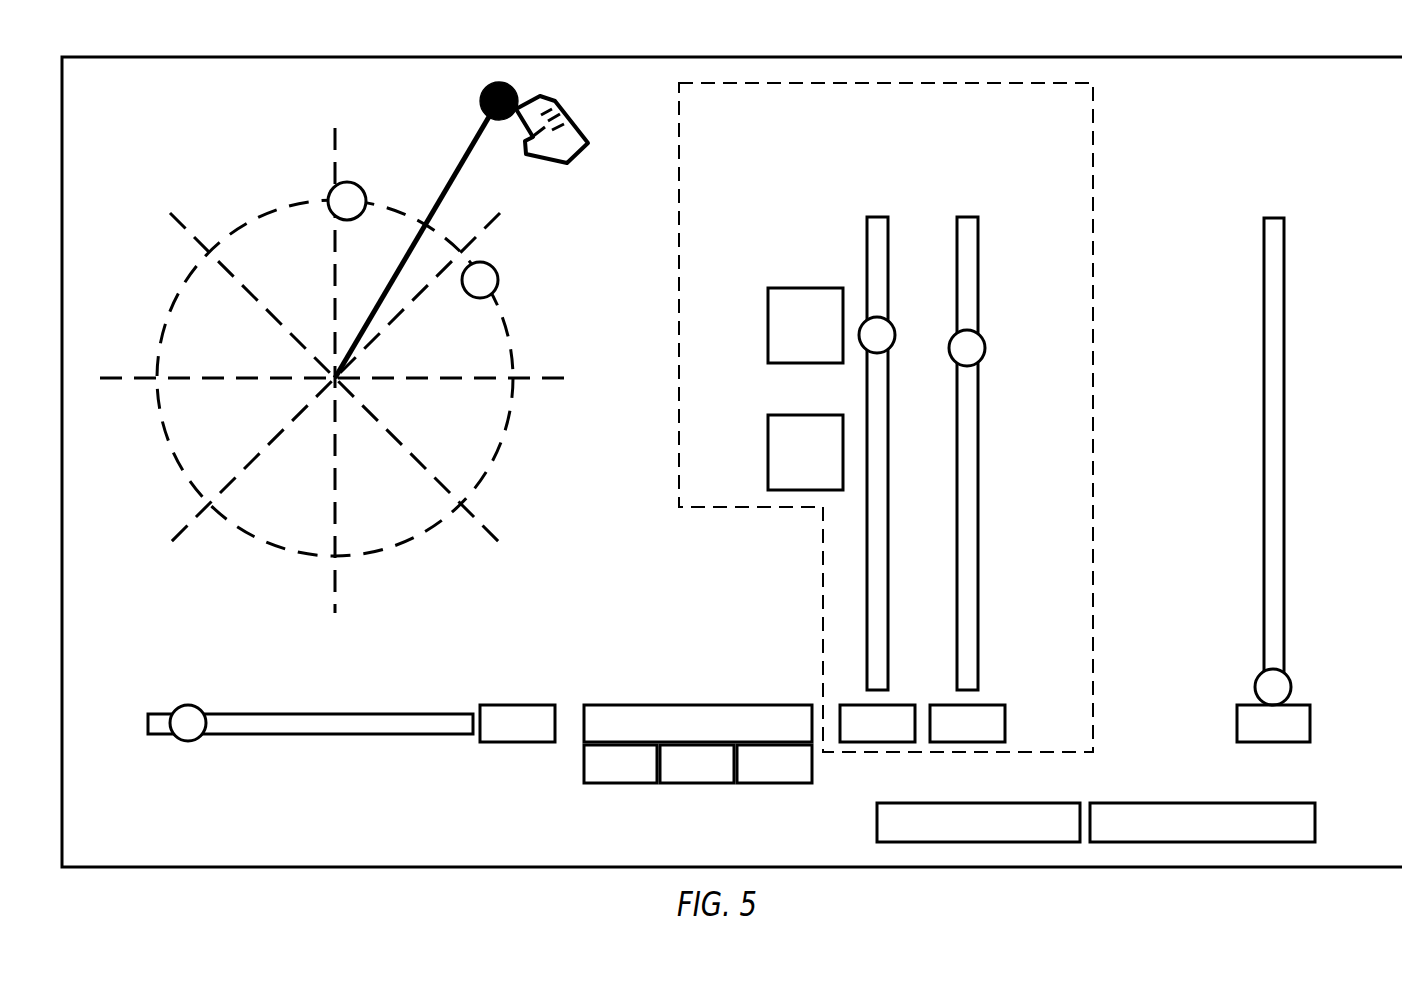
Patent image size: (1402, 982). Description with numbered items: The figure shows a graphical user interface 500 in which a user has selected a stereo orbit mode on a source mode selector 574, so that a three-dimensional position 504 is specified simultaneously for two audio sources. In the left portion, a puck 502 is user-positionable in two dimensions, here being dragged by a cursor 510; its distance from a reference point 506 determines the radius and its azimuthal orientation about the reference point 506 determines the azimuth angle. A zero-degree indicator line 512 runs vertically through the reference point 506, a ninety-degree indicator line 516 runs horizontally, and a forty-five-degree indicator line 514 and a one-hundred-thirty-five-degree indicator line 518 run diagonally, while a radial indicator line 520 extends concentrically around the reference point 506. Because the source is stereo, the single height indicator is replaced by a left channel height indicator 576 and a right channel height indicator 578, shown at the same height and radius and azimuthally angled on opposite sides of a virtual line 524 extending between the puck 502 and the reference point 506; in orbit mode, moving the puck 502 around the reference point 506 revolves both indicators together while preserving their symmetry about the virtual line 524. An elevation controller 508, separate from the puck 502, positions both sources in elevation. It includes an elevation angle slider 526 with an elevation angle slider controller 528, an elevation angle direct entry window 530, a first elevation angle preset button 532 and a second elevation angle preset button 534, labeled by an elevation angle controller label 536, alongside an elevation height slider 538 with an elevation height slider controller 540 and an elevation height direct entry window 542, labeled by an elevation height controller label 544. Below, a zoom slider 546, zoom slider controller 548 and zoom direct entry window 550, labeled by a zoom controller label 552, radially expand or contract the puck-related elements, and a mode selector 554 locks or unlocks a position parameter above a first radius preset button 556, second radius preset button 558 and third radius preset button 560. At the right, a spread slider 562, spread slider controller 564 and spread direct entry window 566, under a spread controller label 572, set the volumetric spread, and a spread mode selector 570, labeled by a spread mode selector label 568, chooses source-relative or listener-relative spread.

The graphical user interface 500 is at (742, 56).
The puck 502 is at (481, 100).
The three-dimensional position 504 is at (376, 796).
The reference point 506 is at (332, 382).
The elevation controller 508 is at (928, 82).
The cursor 510 is at (570, 167).
The zero-degree indicator line 512 is at (334, 148).
The 45-degree indicator line 514 is at (386, 338).
The 90-degree indicator line 516 is at (565, 384).
The 135-degree indicator line 518 is at (500, 540).
The radial indicator line 520 is at (512, 332).
The virtual line 524 is at (470, 150).
The elevation angle slider 526 is at (888, 450).
The elevation angle slider controller 528 is at (895, 336).
The elevation angle direct entry window 530 is at (880, 743).
The first elevation angle preset button 532 is at (767, 325).
The second elevation angle preset button 534 is at (767, 451).
The elevation angle controller label 536 is at (879, 160).
The elevation height slider 538 is at (979, 452).
The elevation height slider controller 540 is at (986, 349).
The elevation height direct entry window 542 is at (1006, 722).
The elevation height controller label 544 is at (969, 160).
The zoom slider 546 is at (314, 712).
The zoom slider controller 548 is at (188, 704).
The zoom direct entry window 550 is at (517, 704).
The zoom controller label 552 is at (106, 704).
The mode selector 554 is at (700, 704).
The first radius preset button 556 is at (620, 784).
The second radius preset button 558 is at (698, 784).
The third radius preset button 560 is at (775, 784).
The spread slider 562 is at (1285, 452).
The spread slider controller 564 is at (1292, 687).
The spread direct entry window 566 is at (1311, 723).
The spread mode selector label 568 is at (1325, 778).
The spread mode selector 570 is at (1316, 822).
The spread controller label 572 is at (1276, 160).
The source mode selector 574 is at (876, 819).
The left channel height indicator 576 is at (352, 183).
The right channel height indicator 578 is at (499, 281).